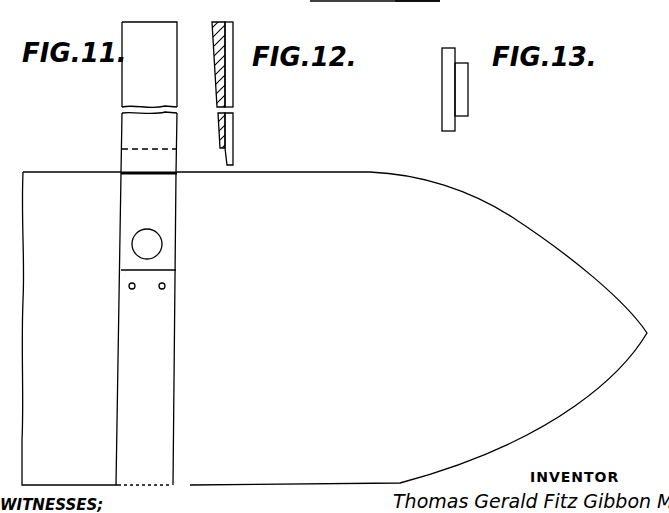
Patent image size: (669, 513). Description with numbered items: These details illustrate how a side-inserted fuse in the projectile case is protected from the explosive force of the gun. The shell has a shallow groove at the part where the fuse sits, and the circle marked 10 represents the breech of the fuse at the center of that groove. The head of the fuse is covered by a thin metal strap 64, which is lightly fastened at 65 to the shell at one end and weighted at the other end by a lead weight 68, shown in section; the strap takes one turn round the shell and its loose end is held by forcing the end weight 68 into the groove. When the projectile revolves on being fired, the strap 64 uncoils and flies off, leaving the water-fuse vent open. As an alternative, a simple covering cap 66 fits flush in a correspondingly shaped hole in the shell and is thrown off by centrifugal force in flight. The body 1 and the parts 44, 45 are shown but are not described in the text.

In FIG. 11, the projectile body 1 is at (364, 183).
In FIG. 11, the breech of the fuse 10 is at (153, 244).
In FIG. 12, the member 44 is at (404, 1).
In FIG. 12, the member 45 is at (365, 1).
In FIG. 11, the thin metal strap 64 is at (127, 86).
In FIG. 12, the thin metal strap 64 is at (233, 98).
In FIG. 11, the fastening 65 is at (136, 287).
In FIG. 13, the covering cap 66 is at (462, 93).
In FIG. 12, the lead weight 68 is at (213, 22).